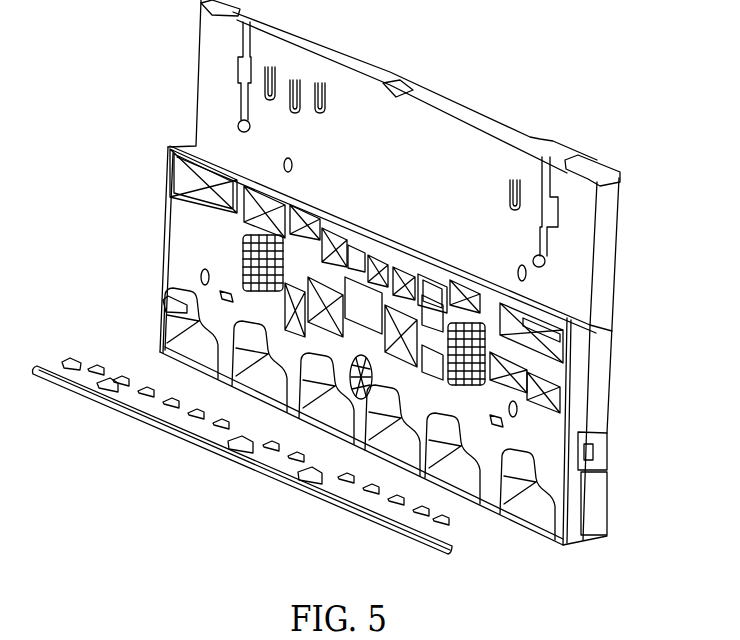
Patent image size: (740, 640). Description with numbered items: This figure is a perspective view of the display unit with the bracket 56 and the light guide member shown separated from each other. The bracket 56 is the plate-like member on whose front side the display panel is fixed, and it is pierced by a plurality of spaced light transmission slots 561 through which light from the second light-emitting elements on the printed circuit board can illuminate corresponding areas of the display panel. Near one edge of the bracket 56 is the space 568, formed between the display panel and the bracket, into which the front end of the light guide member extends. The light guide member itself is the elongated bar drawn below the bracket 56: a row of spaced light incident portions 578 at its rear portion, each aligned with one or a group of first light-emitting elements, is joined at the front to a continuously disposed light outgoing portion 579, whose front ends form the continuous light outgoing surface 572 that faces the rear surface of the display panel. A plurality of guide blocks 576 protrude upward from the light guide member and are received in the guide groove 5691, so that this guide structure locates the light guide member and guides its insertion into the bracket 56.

The bracket 56 is at (389, 286).
The light transmission slot 561 is at (188, 312).
The guide groove 5691 is at (355, 434).
The space 568 is at (564, 538).
The light outgoing surface 572 is at (268, 448).
The guide block 576 is at (233, 449).
The light incident portion 578 is at (110, 370).
The light outgoing portion 579 is at (62, 361).